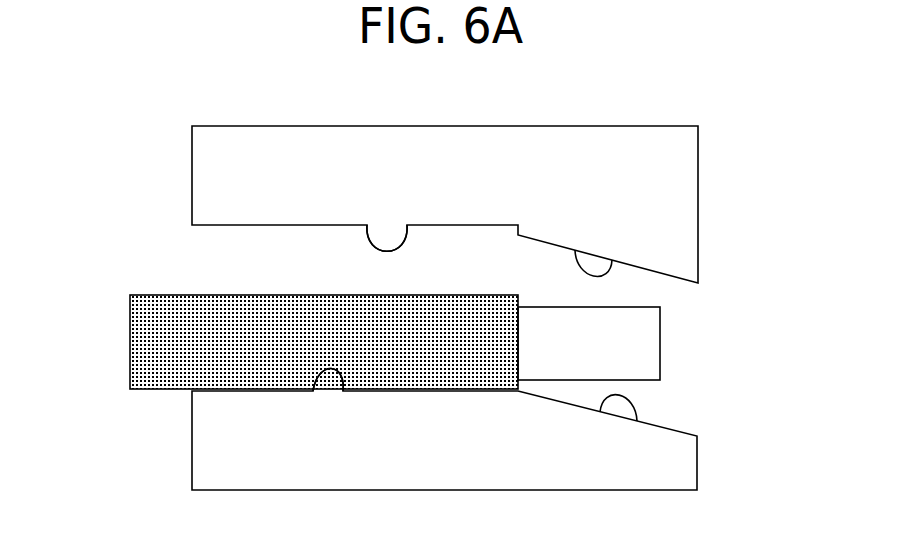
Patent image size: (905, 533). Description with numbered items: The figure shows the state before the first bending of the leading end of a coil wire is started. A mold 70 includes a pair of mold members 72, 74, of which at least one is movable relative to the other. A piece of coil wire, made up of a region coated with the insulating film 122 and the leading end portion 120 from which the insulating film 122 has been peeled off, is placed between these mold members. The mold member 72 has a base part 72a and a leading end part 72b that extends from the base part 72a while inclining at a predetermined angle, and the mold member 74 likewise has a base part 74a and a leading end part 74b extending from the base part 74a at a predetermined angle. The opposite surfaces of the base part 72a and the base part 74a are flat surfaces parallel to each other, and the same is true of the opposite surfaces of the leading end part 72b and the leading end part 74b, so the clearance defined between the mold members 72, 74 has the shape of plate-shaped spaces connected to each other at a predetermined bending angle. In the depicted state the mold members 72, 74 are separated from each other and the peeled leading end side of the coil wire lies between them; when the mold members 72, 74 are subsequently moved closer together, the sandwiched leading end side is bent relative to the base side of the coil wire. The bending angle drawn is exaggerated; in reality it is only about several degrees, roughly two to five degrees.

The mold 70 is at (740, 180).
The mold member 72 is at (192, 150).
The base part 72a is at (399, 242).
The leading end part 72b is at (614, 270).
The mold member 74 is at (192, 450).
The base part 74a is at (343, 391).
The leading end part 74b is at (634, 410).
The leading end portion 120 is at (647, 340).
The insulating film 122 is at (172, 295).